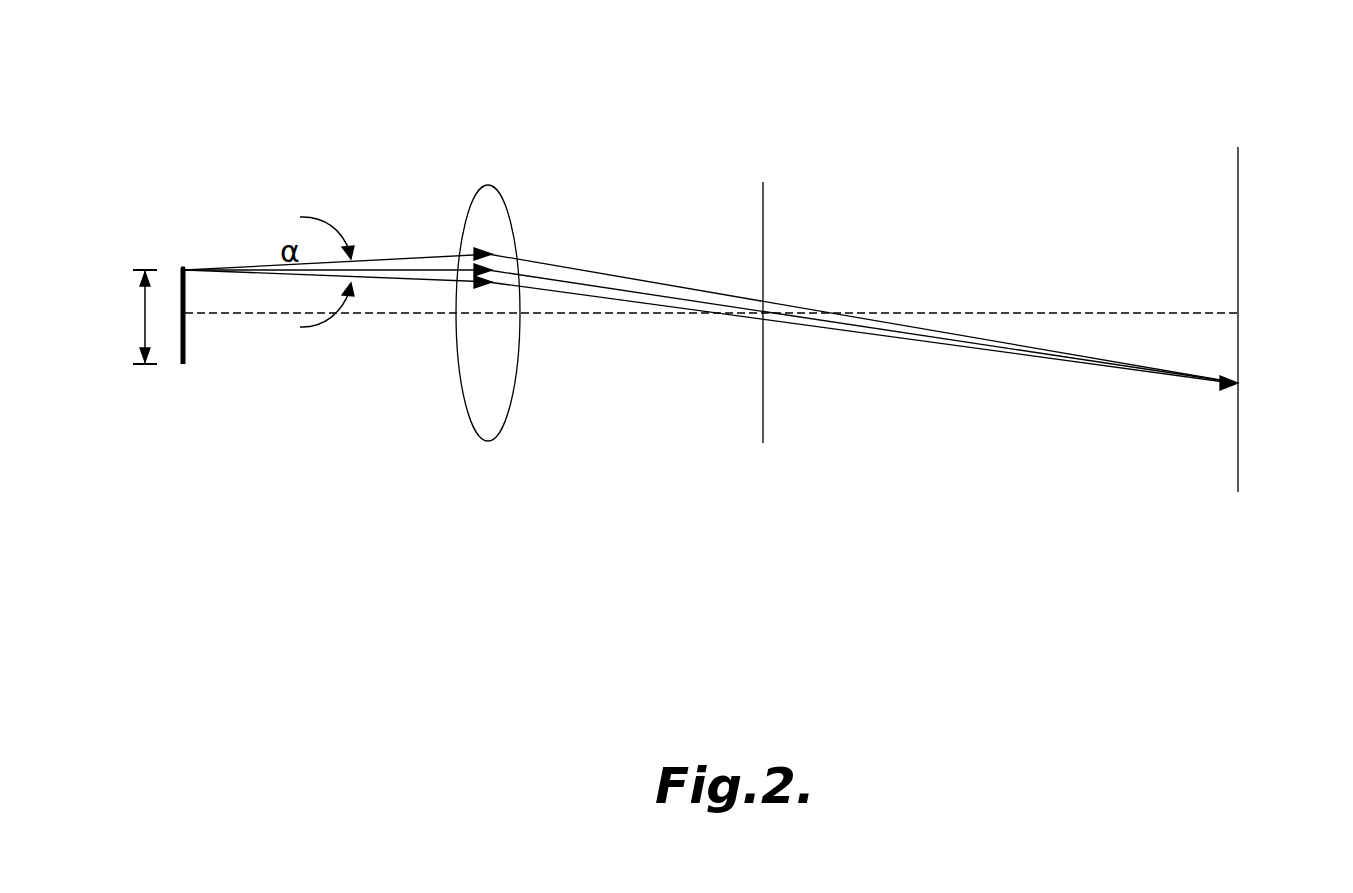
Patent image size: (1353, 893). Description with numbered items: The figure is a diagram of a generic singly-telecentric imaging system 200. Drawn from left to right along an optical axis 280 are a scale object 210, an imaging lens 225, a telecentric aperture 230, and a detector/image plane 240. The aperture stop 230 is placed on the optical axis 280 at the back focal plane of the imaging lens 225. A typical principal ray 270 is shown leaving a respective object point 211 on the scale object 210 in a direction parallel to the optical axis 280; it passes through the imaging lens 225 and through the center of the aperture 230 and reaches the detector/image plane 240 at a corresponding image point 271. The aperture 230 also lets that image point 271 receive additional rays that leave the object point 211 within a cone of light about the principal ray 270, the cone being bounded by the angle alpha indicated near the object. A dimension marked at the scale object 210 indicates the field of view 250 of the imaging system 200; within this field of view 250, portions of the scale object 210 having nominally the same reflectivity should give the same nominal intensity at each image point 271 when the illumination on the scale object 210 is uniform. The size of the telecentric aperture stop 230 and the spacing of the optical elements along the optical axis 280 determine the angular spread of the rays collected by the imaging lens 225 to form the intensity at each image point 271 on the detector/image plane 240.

The singly-telecentric imaging system 200 is at (997, 113).
The scale object 210 is at (185, 364).
The object point 211 is at (185, 268).
The imaging lens 225 is at (488, 186).
The telecentric aperture 230 is at (763, 193).
The detector/image plane 240 is at (1238, 175).
The field of view 250 is at (143, 325).
The principal ray 270 is at (420, 270).
The image point 271 is at (1242, 378).
The optical axis 280 is at (1033, 311).